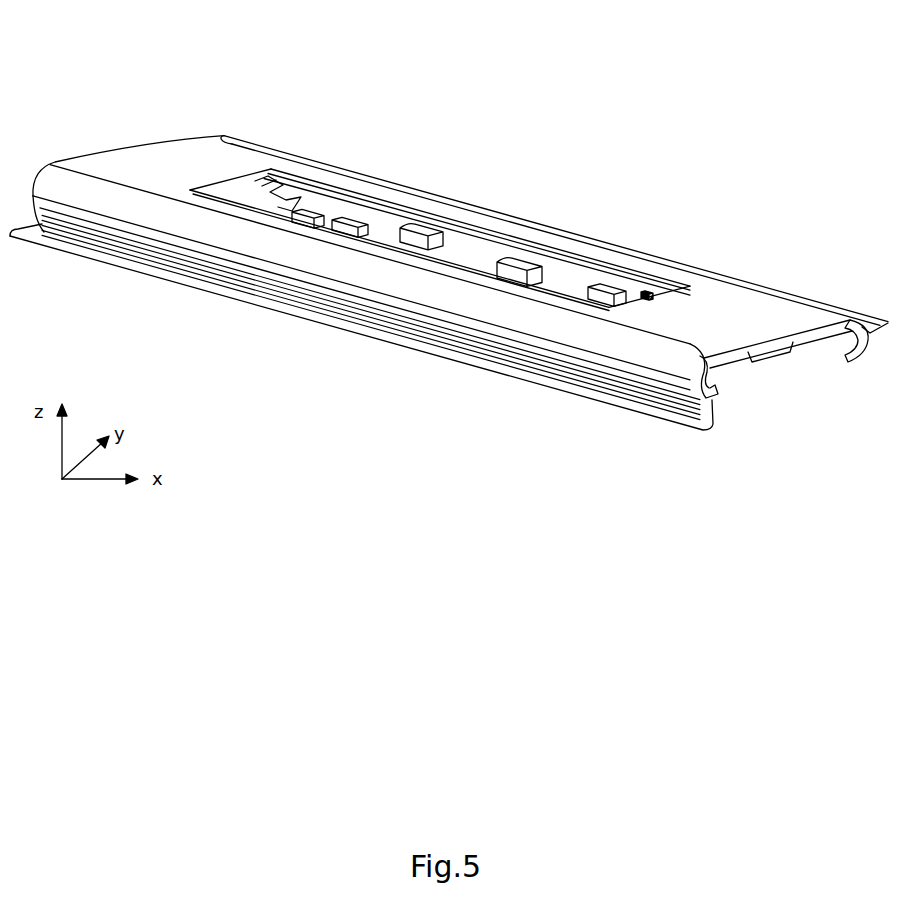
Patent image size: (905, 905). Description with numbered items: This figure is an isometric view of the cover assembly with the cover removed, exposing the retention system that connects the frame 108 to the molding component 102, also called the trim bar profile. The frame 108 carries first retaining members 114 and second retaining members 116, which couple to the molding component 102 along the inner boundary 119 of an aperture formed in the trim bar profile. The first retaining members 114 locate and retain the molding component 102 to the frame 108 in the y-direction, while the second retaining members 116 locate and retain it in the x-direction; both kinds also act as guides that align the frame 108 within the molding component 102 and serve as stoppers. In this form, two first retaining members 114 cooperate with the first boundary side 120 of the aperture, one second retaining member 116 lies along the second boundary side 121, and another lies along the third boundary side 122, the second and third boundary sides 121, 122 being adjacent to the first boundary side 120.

The molding component 102 is at (637, 337).
The frame 108 is at (350, 212).
The first retaining member 114 is at (430, 222).
The second retaining member 116 is at (262, 183).
The inner boundary 119 is at (492, 227).
The first boundary side 120 is at (633, 279).
The second boundary side 121 is at (683, 288).
The third boundary side 122 is at (200, 186).